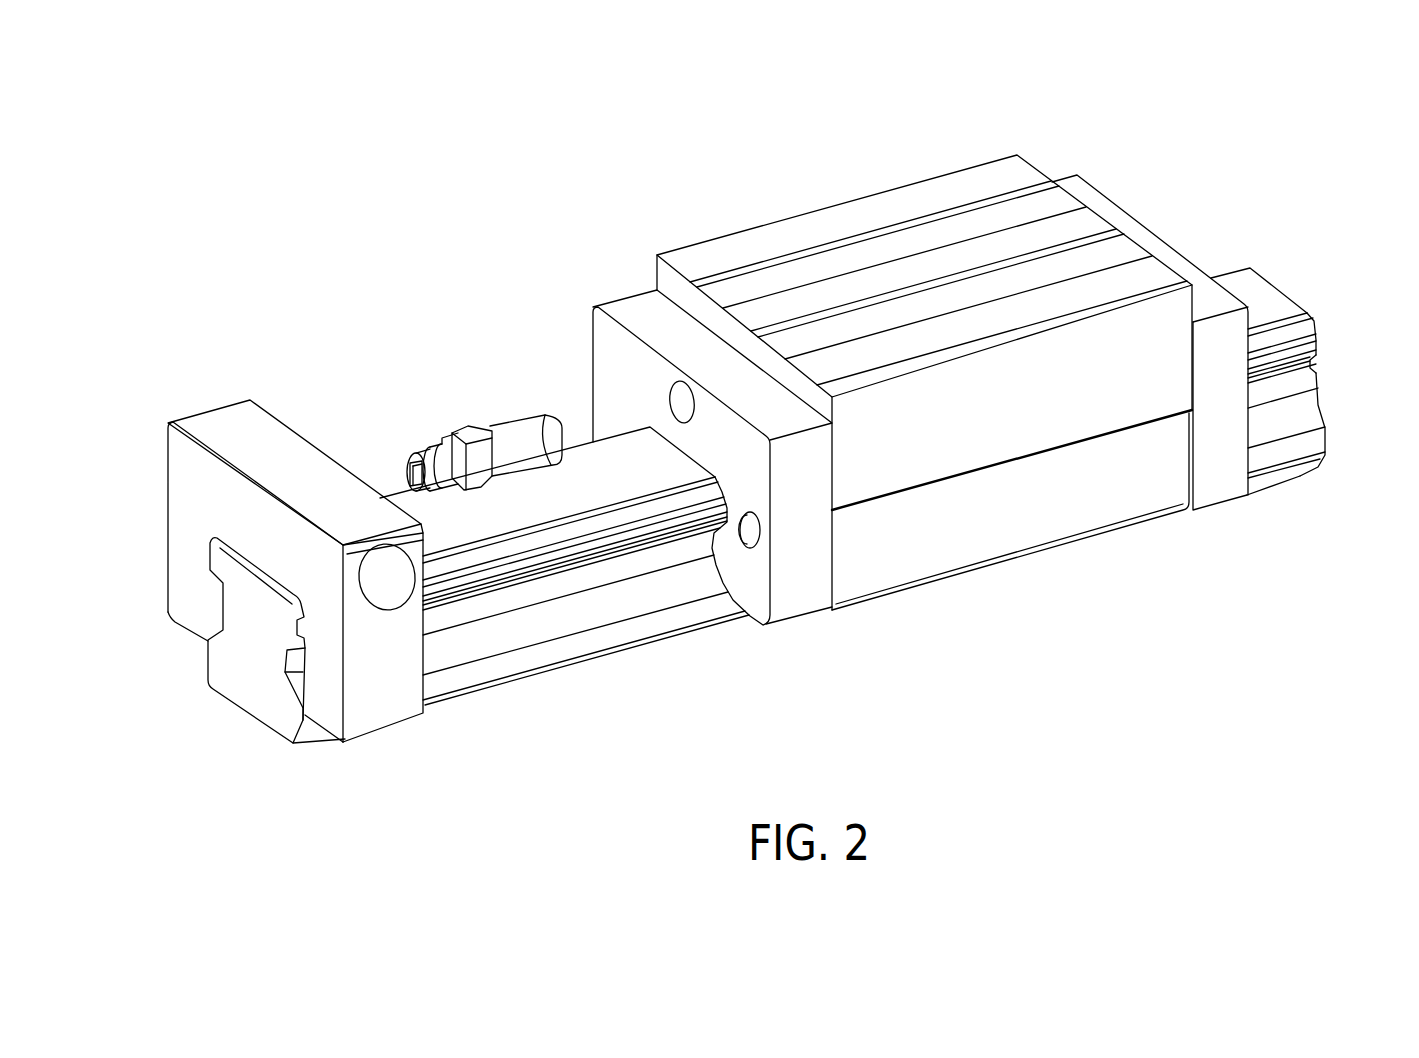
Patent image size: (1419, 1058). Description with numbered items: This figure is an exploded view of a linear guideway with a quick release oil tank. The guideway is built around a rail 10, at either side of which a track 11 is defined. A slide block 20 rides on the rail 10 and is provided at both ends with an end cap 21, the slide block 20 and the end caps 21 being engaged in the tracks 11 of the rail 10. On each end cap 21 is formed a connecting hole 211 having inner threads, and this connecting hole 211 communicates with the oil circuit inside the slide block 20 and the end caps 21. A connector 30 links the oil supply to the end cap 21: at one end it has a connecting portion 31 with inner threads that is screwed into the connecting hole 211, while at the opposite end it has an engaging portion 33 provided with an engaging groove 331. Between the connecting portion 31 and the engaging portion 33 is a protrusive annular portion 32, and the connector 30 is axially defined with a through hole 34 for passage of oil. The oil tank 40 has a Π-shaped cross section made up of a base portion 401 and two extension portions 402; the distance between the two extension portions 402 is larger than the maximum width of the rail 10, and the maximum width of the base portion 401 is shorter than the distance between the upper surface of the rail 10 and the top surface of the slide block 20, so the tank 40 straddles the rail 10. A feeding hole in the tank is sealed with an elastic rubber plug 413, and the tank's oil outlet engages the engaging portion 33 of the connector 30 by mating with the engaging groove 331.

The rail 10 is at (800, 477).
The track 11 is at (1297, 423).
The slide block 20 is at (857, 197).
The end cap 21 is at (947, 446).
The connecting hole 211 is at (682, 393).
The connector 30 is at (447, 395).
The connecting portion 31 is at (527, 432).
The protrusive annular portion 32 is at (473, 437).
The engaging portion 33 is at (395, 407).
The engaging groove 331 is at (414, 466).
The through hole 34 is at (409, 470).
The oil tank 40 is at (259, 536).
The base portion 401 is at (240, 517).
The extension portion 402 is at (180, 583).
The elastic rubber plug 413 is at (377, 580).